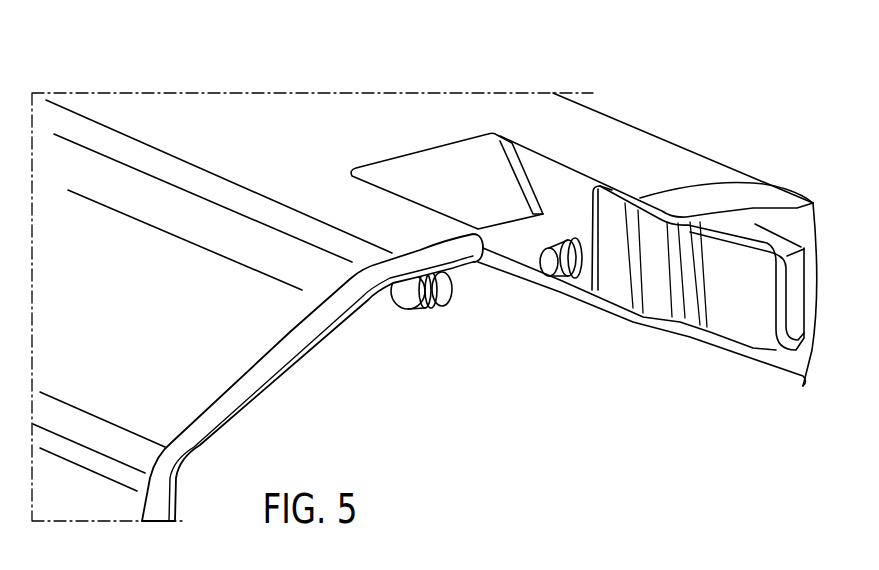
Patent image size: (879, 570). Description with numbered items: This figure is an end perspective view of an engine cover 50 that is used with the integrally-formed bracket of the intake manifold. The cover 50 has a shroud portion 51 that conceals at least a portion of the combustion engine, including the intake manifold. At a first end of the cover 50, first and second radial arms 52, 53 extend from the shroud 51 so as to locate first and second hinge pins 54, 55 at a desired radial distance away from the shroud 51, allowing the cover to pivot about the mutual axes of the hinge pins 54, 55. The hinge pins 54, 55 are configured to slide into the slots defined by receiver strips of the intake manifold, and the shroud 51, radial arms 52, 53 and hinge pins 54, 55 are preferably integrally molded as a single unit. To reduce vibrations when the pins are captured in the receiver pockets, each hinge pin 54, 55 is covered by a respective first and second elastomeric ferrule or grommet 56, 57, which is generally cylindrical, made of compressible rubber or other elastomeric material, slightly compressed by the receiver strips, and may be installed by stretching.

The engine cover 50 is at (705, 122).
The shroud portion 51 is at (275, 130).
The first radial arm 52 is at (547, 185).
The second radial arm 53 is at (405, 300).
The first hinge pin 54 is at (548, 268).
The second hinge pin 55 is at (426, 312).
The first elastomeric ferrule 56 is at (583, 272).
The second elastomeric ferrule 57 is at (445, 293).